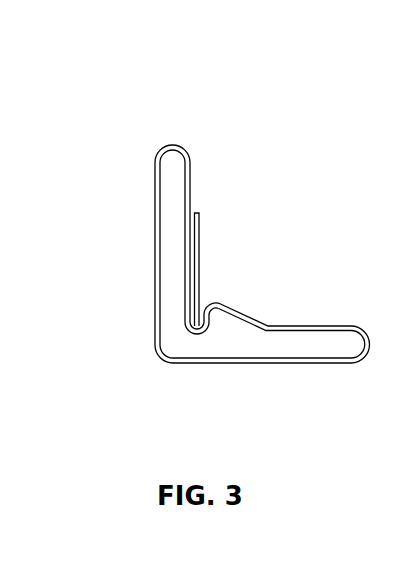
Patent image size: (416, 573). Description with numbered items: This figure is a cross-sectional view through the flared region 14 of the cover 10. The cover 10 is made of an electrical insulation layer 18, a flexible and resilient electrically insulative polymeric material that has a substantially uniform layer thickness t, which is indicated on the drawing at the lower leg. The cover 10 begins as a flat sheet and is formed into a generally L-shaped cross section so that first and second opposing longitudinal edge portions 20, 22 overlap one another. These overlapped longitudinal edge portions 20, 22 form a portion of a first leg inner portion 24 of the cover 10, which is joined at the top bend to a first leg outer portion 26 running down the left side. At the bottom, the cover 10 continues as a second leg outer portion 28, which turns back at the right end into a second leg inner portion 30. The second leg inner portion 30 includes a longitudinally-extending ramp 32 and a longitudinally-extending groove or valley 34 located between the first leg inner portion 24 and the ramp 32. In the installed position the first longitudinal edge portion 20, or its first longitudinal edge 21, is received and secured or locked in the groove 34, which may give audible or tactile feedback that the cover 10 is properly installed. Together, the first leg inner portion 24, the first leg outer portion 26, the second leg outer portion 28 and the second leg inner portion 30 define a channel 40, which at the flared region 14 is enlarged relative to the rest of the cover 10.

The cover 10 is at (263, 50).
The flared region 14 is at (268, 102).
The electrical insulation layer 18 is at (158, 177).
The first longitudinal edge portion 20 is at (180, 222).
The first longitudinal edge 21 is at (187, 328).
The second longitudinal edge portion 22 is at (203, 237).
The first leg inner portion 24 is at (222, 180).
The first leg outer portion 26 is at (145, 264).
The second leg outer portion 28 is at (260, 368).
The second leg inner portion 30 is at (323, 313).
The ramp 32 is at (248, 305).
The groove 34 is at (212, 300).
The channel 40 is at (200, 342).